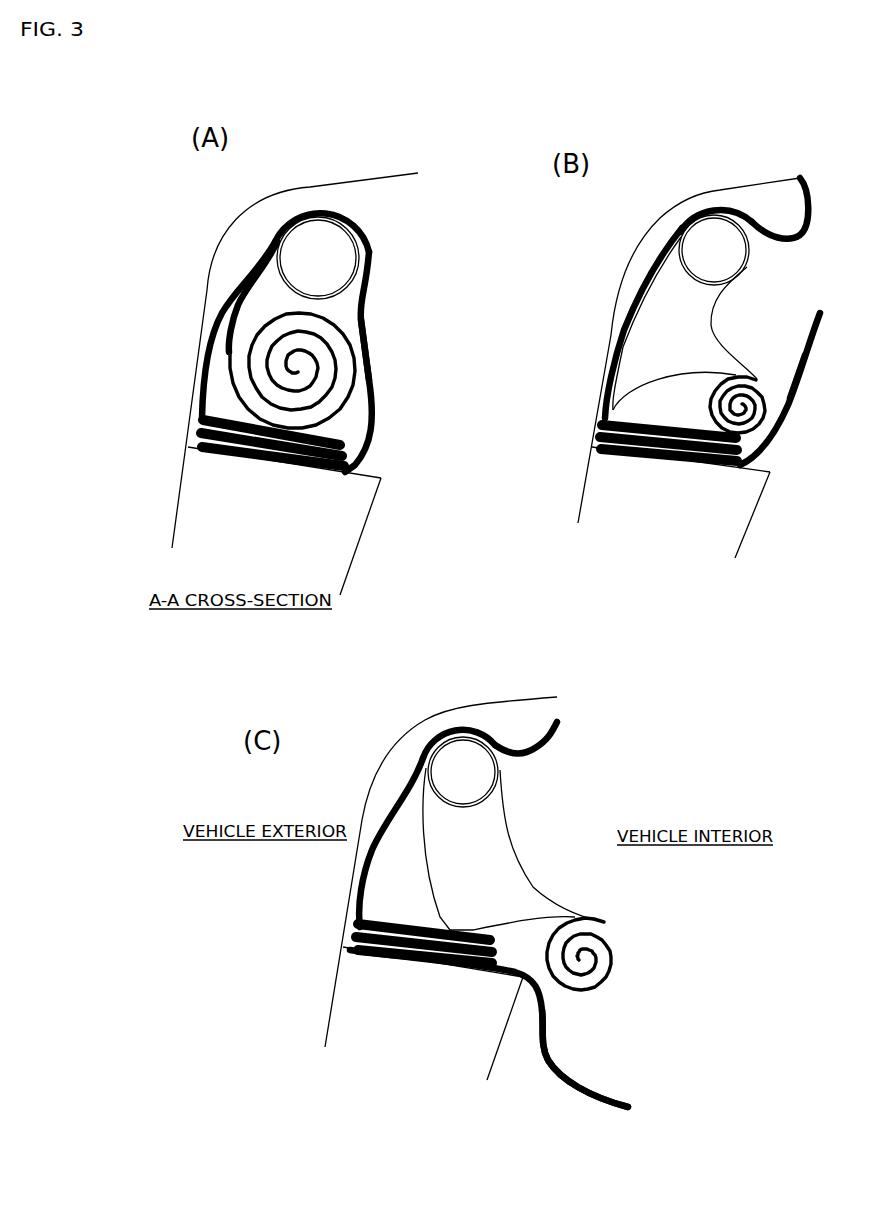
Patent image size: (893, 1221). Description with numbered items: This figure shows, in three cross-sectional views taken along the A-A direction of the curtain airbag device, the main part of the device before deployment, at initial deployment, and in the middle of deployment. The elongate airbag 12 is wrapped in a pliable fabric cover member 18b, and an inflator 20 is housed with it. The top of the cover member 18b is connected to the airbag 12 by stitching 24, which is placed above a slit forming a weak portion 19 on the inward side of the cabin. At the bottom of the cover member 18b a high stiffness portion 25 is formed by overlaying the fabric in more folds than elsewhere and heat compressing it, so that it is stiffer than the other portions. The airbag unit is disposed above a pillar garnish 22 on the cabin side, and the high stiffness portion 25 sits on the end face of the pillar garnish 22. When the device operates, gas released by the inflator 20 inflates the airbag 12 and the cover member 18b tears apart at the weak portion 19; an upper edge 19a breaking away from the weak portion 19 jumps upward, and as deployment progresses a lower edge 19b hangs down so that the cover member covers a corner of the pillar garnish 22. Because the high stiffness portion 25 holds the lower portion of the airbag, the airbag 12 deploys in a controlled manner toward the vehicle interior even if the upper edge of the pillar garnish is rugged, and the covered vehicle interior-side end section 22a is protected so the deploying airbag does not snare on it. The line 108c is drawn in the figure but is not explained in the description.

The airbag 12 is at (346, 318).
The cover member 18b is at (212, 312).
The weak portion 19 is at (374, 255).
The upper edge 19a is at (804, 181).
The lower edge 19b is at (822, 312).
The inflator 20 is at (272, 237).
The pillar garnish 22 is at (362, 535).
The vehicle interior-side end section 22a is at (383, 478).
The stitching 24 is at (340, 222).
The high stiffness portion 25 is at (344, 450).
The cushion outer panel portion 108c is at (377, 376).